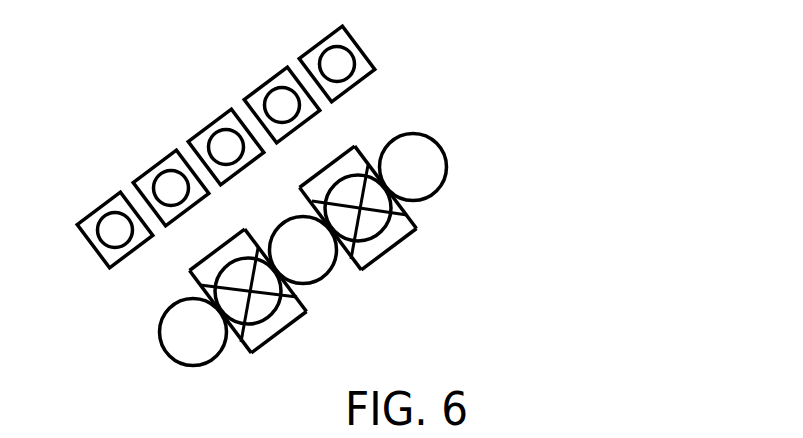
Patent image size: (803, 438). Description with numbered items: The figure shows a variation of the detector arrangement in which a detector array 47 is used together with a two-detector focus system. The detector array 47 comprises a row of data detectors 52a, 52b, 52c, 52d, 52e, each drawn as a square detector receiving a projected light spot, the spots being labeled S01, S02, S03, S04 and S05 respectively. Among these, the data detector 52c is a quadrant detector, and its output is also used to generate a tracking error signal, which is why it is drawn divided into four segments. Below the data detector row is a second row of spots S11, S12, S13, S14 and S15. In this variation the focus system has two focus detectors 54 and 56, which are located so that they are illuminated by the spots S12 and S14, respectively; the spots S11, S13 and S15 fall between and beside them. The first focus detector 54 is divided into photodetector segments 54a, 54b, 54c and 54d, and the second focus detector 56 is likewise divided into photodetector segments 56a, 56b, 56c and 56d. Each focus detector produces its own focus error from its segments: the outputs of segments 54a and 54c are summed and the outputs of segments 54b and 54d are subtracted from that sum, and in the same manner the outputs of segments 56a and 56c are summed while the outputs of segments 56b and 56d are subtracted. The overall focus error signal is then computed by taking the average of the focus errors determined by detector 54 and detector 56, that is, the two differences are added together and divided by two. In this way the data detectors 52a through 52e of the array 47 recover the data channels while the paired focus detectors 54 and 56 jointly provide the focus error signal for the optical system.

The detector array 47 is at (104, 66).
The data detector 52a is at (86, 229).
The data detector 52b is at (148, 184).
The data detector 52c is at (227, 122).
The data detector 52d is at (278, 83).
The data detector 52e is at (340, 42).
The focus detector 54 is at (252, 355).
The photodetector segment 54a is at (237, 243).
The photodetector segment 54b is at (285, 293).
The photodetector segment 54c is at (277, 333).
The photodetector segment 54d is at (240, 342).
The focus detector 56 is at (368, 233).
The photodetector segment 56a is at (350, 167).
The photodetector segment 56b is at (380, 201).
The photodetector segment 56c is at (403, 227).
The photodetector segment 56d is at (317, 200).
The optical signal port S01 is at (113, 237).
The optical signal port S02 is at (173, 190).
The optical signal port S03 is at (218, 143).
The optical signal port S04 is at (282, 112).
The optical signal port S05 is at (337, 57).
The optical signal port S11 is at (182, 316).
The spot S12 is at (232, 281).
The optical signal port S13 is at (323, 278).
The spot S14 is at (397, 225).
The optical signal port S15 is at (412, 160).